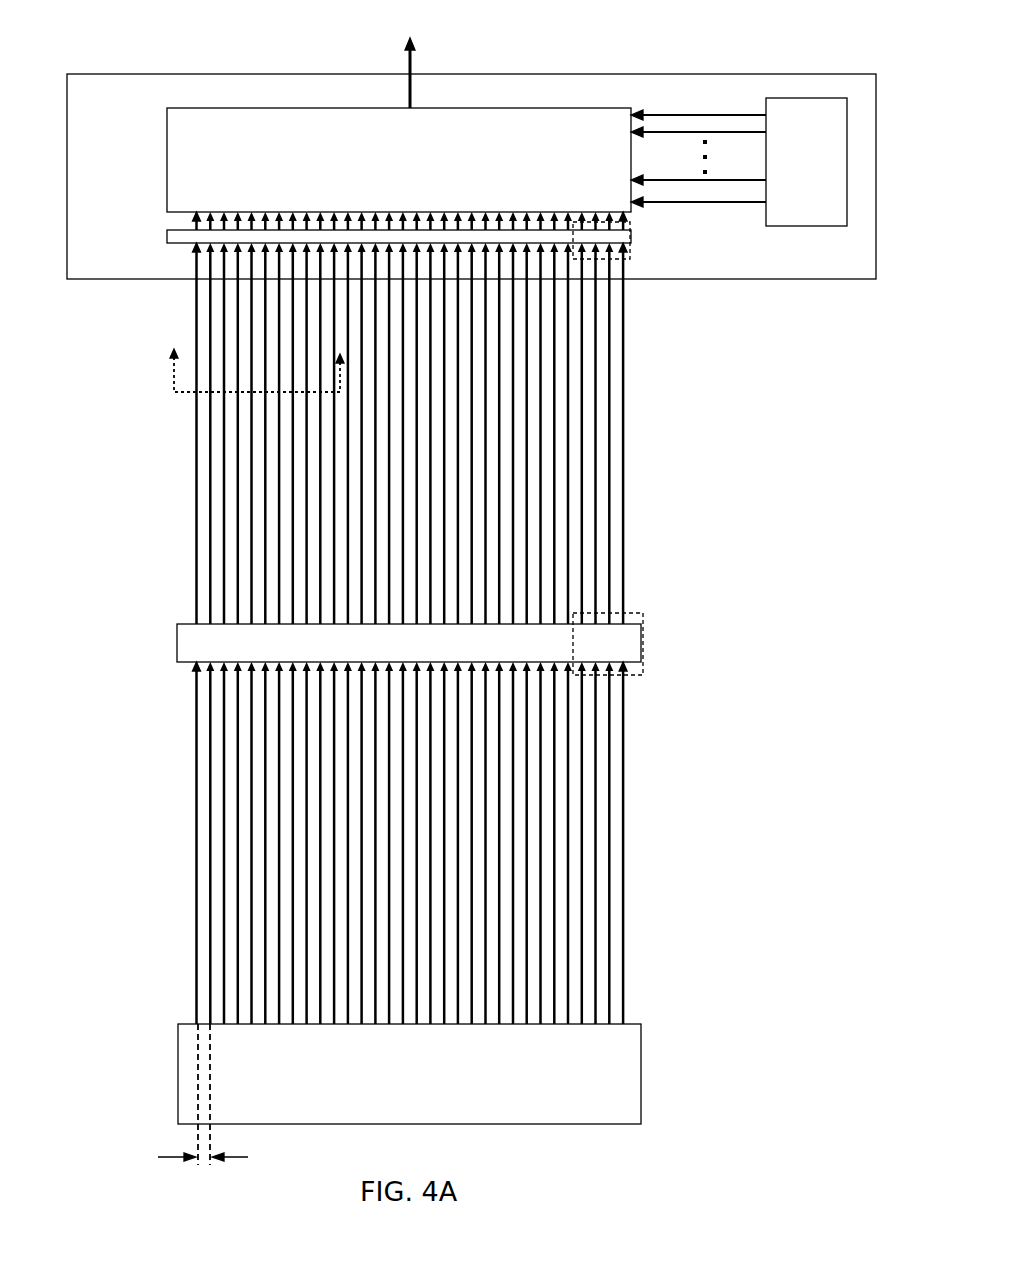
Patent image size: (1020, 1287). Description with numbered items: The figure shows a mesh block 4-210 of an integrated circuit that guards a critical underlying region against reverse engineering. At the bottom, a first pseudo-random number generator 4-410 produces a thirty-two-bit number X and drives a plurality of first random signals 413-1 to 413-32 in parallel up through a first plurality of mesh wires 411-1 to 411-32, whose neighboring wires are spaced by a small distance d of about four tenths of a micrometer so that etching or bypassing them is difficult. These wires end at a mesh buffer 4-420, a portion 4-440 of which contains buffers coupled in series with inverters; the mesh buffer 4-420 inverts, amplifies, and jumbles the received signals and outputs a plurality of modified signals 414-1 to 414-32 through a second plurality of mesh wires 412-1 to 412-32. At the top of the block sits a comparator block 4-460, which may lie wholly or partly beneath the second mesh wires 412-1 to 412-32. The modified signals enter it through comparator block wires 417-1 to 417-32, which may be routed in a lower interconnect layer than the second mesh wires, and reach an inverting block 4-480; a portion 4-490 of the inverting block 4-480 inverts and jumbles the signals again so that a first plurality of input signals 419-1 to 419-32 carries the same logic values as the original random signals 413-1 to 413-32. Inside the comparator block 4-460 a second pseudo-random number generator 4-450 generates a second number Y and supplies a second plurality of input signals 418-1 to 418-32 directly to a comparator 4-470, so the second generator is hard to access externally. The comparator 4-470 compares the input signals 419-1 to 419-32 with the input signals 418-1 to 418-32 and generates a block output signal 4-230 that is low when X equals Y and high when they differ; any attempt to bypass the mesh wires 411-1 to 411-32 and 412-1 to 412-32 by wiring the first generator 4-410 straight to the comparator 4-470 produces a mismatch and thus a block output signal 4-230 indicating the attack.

The mesh block 4-210 is at (455, 608).
The block output signal 4-230 is at (413, 52).
The first pseudo-random number generator 4-410 is at (641, 1077).
The mesh buffer 4-420 is at (177, 654).
The portion of mesh buffer 4-440 is at (643, 619).
The second pseudo-random number generator 4-450 is at (846, 229).
The comparator block 4-460 is at (865, 278).
The comparator 4-470 is at (539, 110).
The inverting block 4-480 is at (167, 245).
The portion of inverting block 4-490 is at (621, 275).
The first mesh wire 411-1 is at (626, 858).
The thirty-second mesh wire 411-32 is at (196, 858).
The first mesh wire of second plurality 412-1 is at (626, 466).
The thirty-second mesh wire of second plurality 412-32 is at (196, 477).
The first random signal 413-1 is at (626, 684).
The thirty-second random signal 413-32 is at (196, 694).
The first modified signal 414-1 is at (626, 592).
The thirty-second modified signal 414-32 is at (196, 616).
The first comparator block wire 417-1 is at (628, 248).
The thirty-second comparator block wire 417-32 is at (196, 277).
The first input signal of second plurality 418-1 is at (734, 202).
The thirty-second input signal of second plurality 418-32 is at (708, 101).
The first input signal 419-1 is at (628, 214).
The thirty-second input signal 419-32 is at (196, 224).